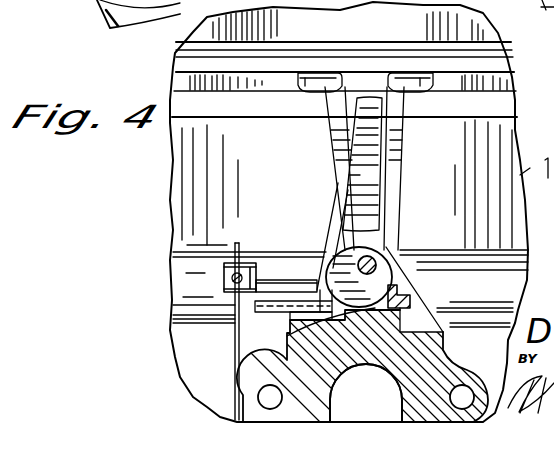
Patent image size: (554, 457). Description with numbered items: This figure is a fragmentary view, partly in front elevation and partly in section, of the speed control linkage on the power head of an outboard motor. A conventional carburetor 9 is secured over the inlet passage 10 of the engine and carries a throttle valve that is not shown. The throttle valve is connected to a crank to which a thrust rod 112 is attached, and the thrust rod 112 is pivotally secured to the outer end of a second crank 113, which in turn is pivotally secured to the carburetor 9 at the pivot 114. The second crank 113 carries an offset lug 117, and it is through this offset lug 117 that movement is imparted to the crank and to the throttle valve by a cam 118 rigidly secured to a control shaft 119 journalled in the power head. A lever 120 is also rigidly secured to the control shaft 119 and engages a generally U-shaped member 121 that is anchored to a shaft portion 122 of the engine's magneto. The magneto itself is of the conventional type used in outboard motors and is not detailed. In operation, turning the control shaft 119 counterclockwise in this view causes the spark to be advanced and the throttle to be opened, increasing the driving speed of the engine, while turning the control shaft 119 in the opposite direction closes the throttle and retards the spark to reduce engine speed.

The carburetor 9 is at (438, 358).
The inlet passage 10 is at (390, 398).
The thrust rod 112 is at (235, 339).
The second crank 113 is at (262, 273).
The pivot of second crank on carburetor 114 is at (412, 299).
The offset lug 117 is at (292, 347).
The cam 118 is at (378, 276).
The control shaft 119 is at (360, 261).
The lever 120 is at (352, 160).
The U-shaped member 121 is at (332, 131).
The shaft portion of the magneto 122 is at (297, 65).